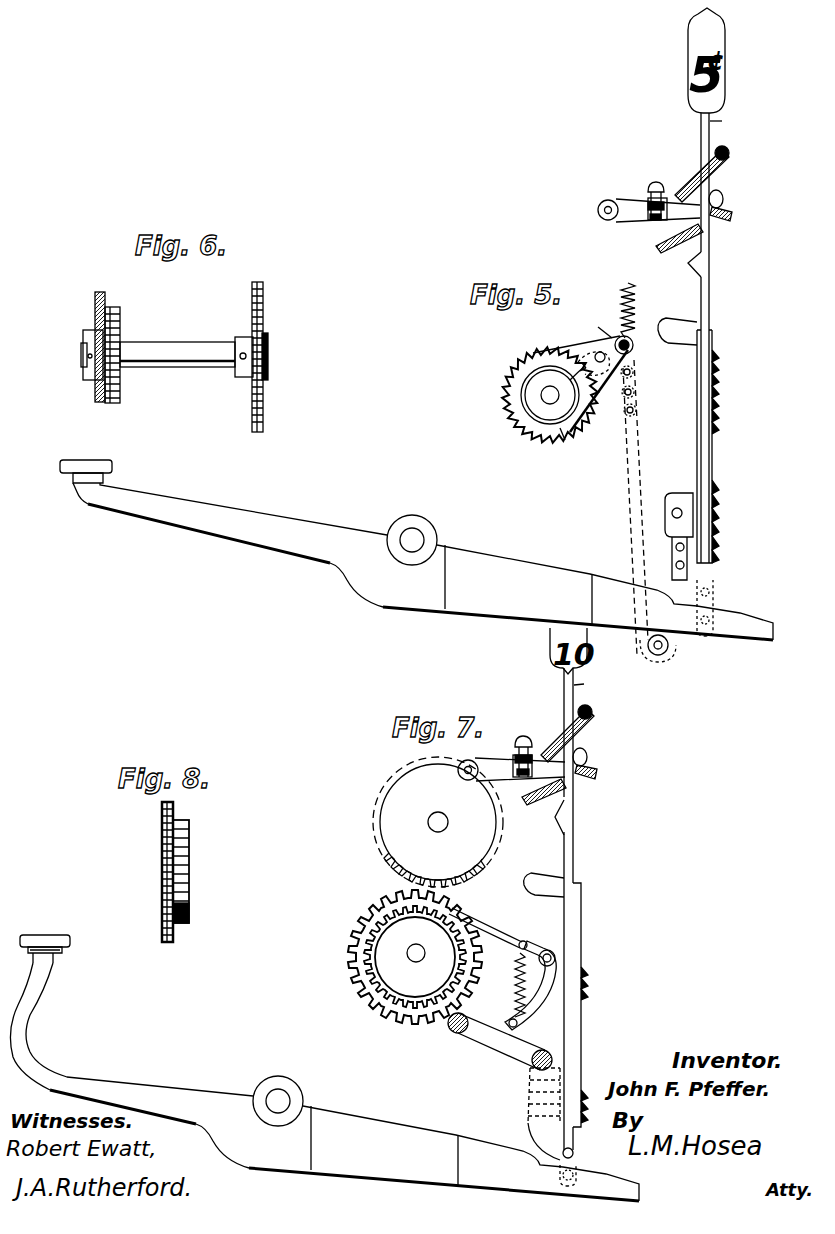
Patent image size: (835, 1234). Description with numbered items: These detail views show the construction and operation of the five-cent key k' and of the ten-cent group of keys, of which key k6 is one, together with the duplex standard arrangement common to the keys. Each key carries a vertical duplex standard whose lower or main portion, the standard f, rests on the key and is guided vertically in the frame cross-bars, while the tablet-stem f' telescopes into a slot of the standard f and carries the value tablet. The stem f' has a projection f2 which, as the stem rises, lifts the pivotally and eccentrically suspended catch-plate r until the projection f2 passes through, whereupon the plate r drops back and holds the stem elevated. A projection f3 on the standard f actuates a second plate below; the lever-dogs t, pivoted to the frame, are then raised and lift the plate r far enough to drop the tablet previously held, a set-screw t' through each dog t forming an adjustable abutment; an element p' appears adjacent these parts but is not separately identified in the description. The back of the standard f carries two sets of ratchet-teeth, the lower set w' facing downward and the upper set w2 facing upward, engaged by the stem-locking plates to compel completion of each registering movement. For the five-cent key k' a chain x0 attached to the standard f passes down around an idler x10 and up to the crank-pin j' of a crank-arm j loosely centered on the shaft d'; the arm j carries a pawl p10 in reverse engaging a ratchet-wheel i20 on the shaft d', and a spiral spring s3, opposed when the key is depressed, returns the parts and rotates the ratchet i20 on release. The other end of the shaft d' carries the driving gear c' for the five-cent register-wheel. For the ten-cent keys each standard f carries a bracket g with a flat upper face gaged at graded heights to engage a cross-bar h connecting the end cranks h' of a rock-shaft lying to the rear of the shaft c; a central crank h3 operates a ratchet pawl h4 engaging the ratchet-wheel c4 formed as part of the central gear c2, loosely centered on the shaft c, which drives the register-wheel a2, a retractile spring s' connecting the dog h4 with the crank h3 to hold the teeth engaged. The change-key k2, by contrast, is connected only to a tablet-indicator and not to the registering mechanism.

In FIG. 5, the standard f is at (720, 338).
In FIG. 7, the standard f is at (577, 927).
In FIG. 5, the tablet-stem f' is at (721, 121).
In FIG. 7, the tablet-stem f' is at (580, 679).
In FIG. 5, the stem projection f2 is at (688, 263).
In FIG. 7, the stem projection f2 is at (555, 816).
In FIG. 5, the standard projection f3 is at (681, 323).
In FIG. 7, the standard projection f3 is at (543, 876).
In FIG. 5, the upper set of ratchet-teeth w2 is at (722, 400).
In FIG. 7, the upper set of ratchet-teeth w2 is at (588, 985).
In FIG. 5, the lower set of ratchet-teeth w' is at (732, 521).
In FIG. 7, the lower set of ratchet-teeth w' is at (593, 1094).
In FIG. 5, the catch-plate r is at (705, 174).
In FIG. 7, the catch-plate r is at (570, 733).
In FIG. 5, the lever-dog t is at (649, 230).
In FIG. 7, the lever-dog t is at (511, 762).
In FIG. 5, the set-screw t' is at (656, 192).
In FIG. 7, the set-screw t' is at (523, 747).
In FIG. 5, the spring catch p' is at (724, 211).
In FIG. 7, the spring catch p' is at (593, 766).
In FIG. 5, the pawl p10 is at (594, 323).
In FIG. 5, the spiral spring s3 is at (637, 310).
In FIG. 6, the crank-arm j is at (86, 347).
In FIG. 5, the crank-pin j' is at (595, 384).
In FIG. 5, the shaft d' is at (532, 395).
In FIG. 6, the shaft d' is at (177, 345).
In FIG. 5, the ratchet-wheel i20 is at (566, 441).
In FIG. 6, the ratchet-wheel i20 is at (120, 382).
In FIG. 5, the chain x0 is at (640, 490).
In FIG. 5, the idler x10 is at (670, 650).
In FIG. 5, the five-cent key k' is at (416, 550).
In FIG. 7, the ten-cent group key k6 is at (324, 1068).
In FIG. 7, the change-key k2 is at (448, 1031).
In FIG. 7, the shaft c is at (415, 957).
In FIG. 6, the driving gear c' is at (257, 357).
In FIG. 7, the central gear c2 is at (360, 933).
In FIG. 8, the central gear c2 is at (163, 858).
In FIG. 7, the ratchet-wheel c4 is at (372, 967).
In FIG. 8, the ratchet-wheel c4 is at (188, 888).
In FIG. 7, the register-wheel a2 is at (438, 822).
In FIG. 7, the cross-bar h is at (542, 1048).
In FIG. 7, the end crank h' is at (501, 1048).
In FIG. 7, the crank h3 is at (506, 1020).
In FIG. 7, the ratchet pawl h4 is at (510, 931).
In FIG. 7, the retractile spring s' is at (512, 985).
In FIG. 7, the bracket g is at (544, 1114).